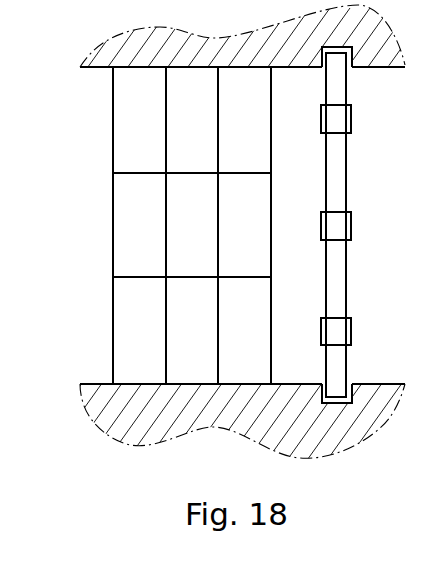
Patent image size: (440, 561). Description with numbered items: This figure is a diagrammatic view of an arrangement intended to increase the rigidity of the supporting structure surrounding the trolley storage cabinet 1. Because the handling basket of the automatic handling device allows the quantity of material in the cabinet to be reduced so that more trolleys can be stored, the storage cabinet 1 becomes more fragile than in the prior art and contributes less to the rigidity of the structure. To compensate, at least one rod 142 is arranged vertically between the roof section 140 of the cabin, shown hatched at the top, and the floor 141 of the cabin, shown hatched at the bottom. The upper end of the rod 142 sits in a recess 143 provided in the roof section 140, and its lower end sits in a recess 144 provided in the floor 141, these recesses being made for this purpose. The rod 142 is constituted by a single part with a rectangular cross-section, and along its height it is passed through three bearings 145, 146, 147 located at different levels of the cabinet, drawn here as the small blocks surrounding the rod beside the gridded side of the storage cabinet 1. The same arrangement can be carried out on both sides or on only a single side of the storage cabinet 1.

The storage cabinet 1 is at (91, 188).
The roof section 140 is at (90, 68).
The floor 141 is at (103, 385).
The rod 142 is at (345, 275).
The recess 143 is at (347, 65).
The recess 144 is at (348, 387).
The bearing 145 is at (350, 327).
The bearing 146 is at (352, 224).
The bearing 147 is at (341, 126).